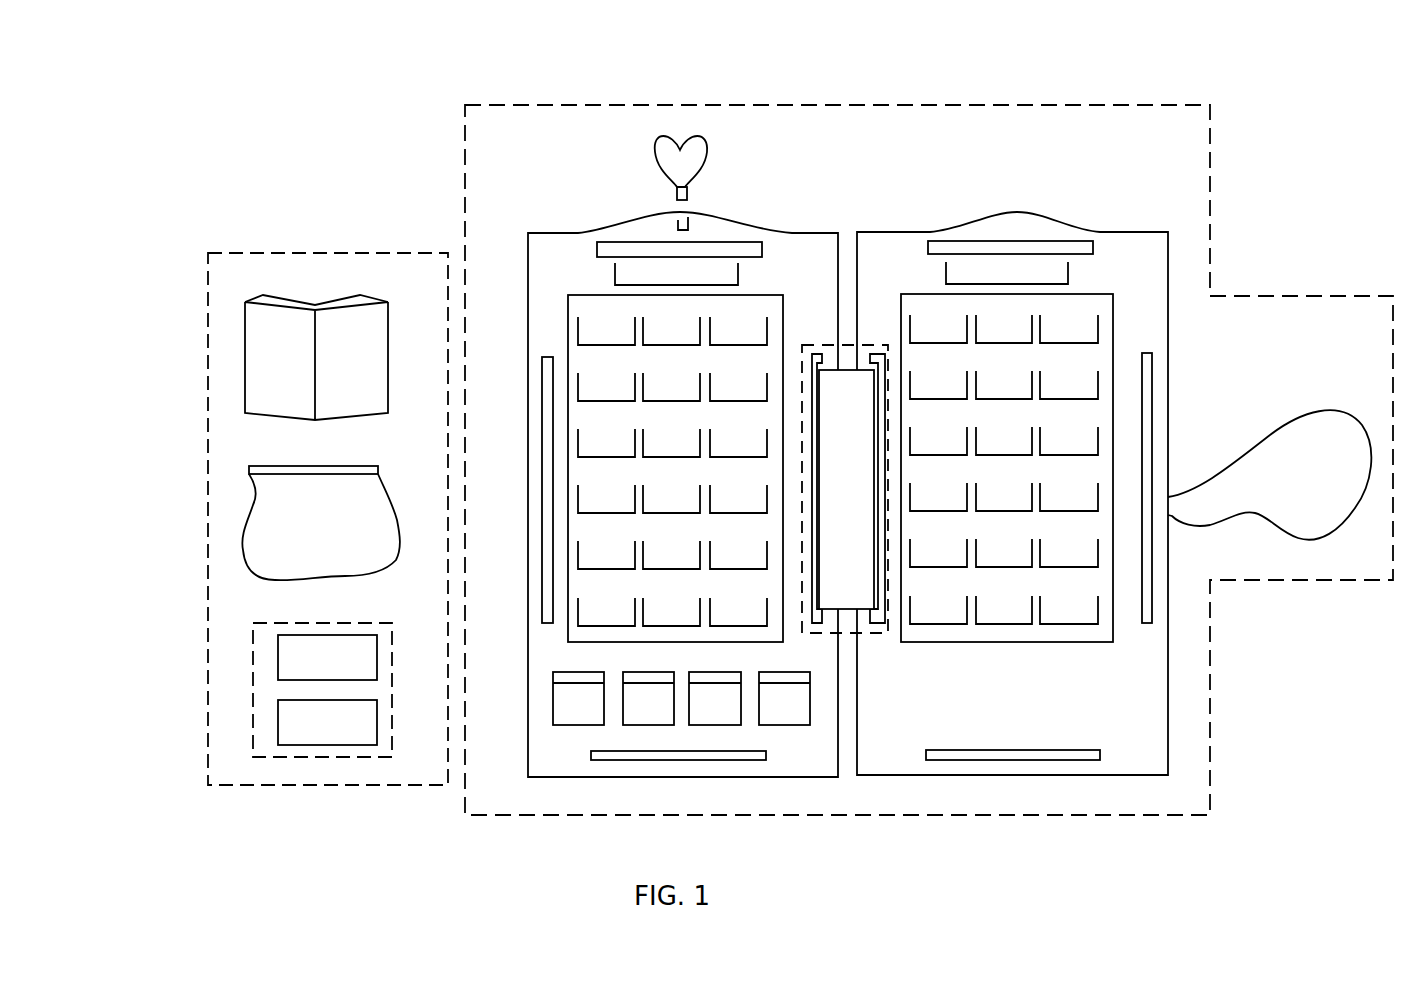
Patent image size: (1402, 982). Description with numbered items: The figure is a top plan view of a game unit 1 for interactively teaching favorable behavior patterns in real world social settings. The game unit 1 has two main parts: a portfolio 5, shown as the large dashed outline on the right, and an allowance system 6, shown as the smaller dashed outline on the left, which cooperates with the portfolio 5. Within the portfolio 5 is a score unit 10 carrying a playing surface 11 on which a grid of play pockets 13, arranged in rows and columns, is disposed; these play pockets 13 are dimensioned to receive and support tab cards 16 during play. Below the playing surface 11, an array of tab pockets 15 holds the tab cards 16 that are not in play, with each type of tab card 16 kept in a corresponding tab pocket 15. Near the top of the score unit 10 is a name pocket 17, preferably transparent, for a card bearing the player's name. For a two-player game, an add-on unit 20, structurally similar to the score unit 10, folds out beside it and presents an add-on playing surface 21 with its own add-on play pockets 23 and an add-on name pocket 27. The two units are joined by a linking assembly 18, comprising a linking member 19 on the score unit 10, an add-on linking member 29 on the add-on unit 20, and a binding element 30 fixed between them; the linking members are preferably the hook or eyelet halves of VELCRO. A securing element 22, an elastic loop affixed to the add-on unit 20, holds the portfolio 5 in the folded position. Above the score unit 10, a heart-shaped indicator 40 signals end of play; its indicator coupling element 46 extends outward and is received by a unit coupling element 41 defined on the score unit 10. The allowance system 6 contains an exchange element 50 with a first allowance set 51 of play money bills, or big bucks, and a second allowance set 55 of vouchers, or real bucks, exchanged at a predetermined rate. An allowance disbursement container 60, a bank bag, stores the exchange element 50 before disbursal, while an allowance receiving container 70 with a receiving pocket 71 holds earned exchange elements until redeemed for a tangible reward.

The game unit 1 is at (432, 82).
The portfolio 5 is at (866, 100).
The allowance system 6 is at (239, 249).
The score unit 10 is at (582, 252).
The playing surface 11 is at (568, 300).
The play pockets 13 is at (687, 400).
The tab pockets 15 is at (622, 714).
The tab cards 16 is at (641, 672).
The name pocket 17 is at (718, 277).
The linking assembly 18 is at (878, 640).
The linking member 19 is at (543, 498).
The add-on unit 20 is at (1094, 230).
The add-on playing surface 21 is at (1113, 328).
The securing element 22 is at (1257, 513).
The add-on play pockets 23 is at (1017, 455).
The add-on name pocket 27 is at (1045, 277).
The add-on linking member 29 is at (878, 352).
The binding element 30 is at (862, 510).
The indicator 40 is at (710, 152).
The unit coupling element 41 is at (678, 227).
The indicator coupling element 46 is at (675, 187).
The exchange element 50 is at (253, 712).
The first allowance set 51 is at (360, 657).
The second allowance set 55 is at (355, 728).
The allowance disbursement container 60 is at (360, 528).
The allowance receiving container 70 is at (365, 372).
The receiving pocket 71 is at (352, 300).